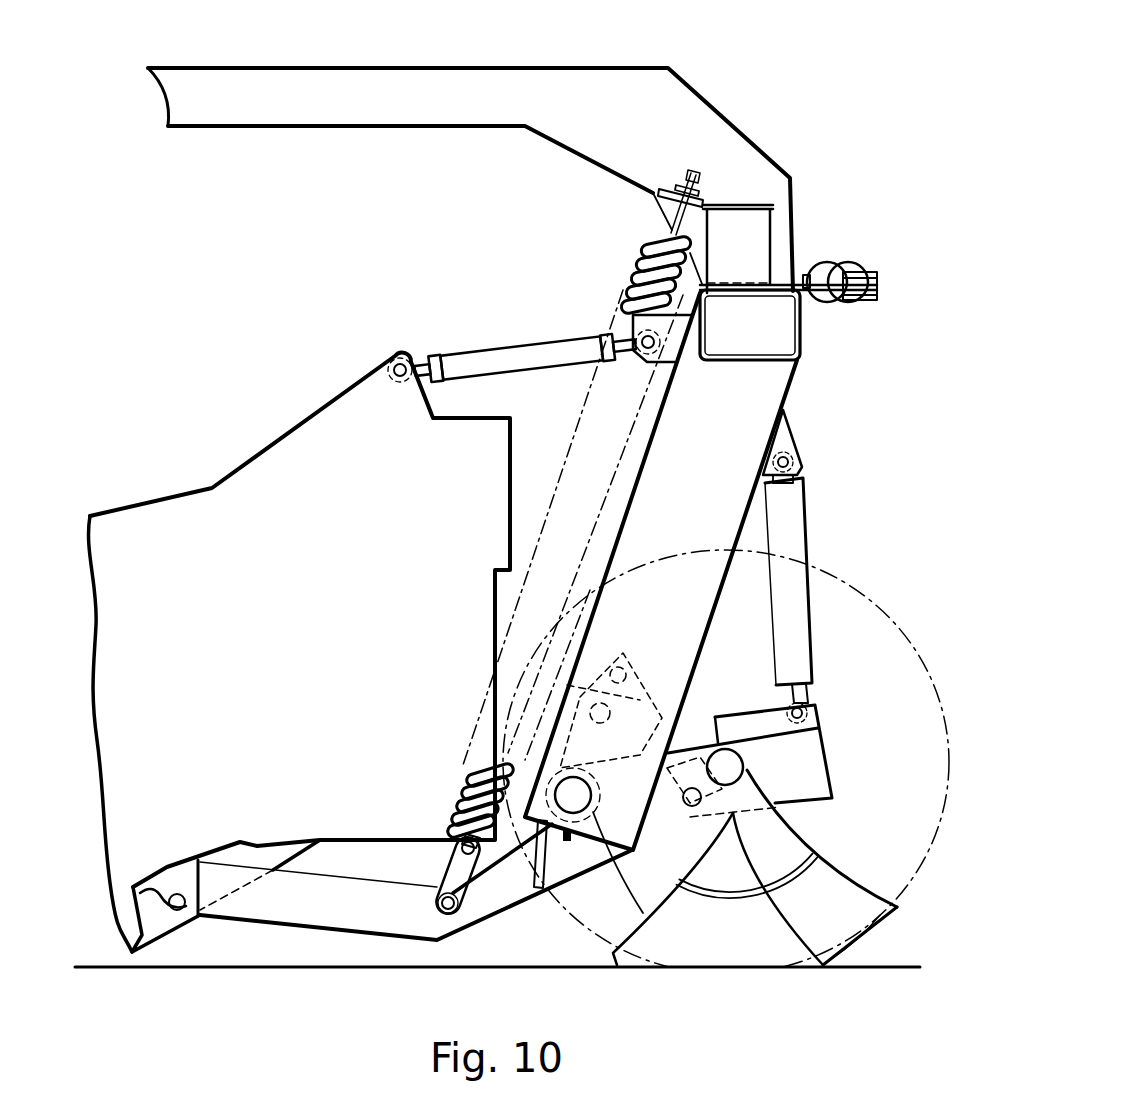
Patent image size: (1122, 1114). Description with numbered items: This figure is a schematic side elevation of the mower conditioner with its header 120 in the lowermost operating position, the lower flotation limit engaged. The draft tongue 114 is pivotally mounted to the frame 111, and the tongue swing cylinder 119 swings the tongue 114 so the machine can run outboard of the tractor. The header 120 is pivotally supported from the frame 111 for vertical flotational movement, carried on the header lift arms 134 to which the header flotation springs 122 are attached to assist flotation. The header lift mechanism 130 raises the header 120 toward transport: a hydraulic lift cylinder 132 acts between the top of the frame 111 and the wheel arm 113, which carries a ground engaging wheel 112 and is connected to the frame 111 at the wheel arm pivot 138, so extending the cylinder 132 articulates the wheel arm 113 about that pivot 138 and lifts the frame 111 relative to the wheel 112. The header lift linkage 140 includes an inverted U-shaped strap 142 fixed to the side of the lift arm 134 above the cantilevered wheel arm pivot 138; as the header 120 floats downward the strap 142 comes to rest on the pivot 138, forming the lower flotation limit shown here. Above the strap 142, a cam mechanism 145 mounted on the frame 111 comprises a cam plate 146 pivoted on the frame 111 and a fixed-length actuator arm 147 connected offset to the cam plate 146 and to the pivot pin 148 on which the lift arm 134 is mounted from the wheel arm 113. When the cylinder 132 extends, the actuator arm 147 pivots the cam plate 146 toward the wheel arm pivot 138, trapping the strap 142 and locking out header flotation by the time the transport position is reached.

The frame 111 is at (747, 397).
The ground engaging wheels 112 is at (870, 946).
The wheel arm 113 is at (806, 759).
The draft tongue 114 is at (328, 72).
The tongue swing cylinder 119 is at (834, 260).
The header 120 is at (232, 467).
The header flotation springs 122 is at (627, 266).
The header lift mechanism 130 is at (826, 666).
The hydraulic lift cylinder 132 is at (787, 541).
The header lift arm 134 is at (377, 916).
The wheel arm pivot 138 is at (643, 913).
The header lift linkage 140 is at (744, 842).
The inverted U-shaped strap 142 is at (535, 875).
The cam mechanism 145 is at (651, 626).
The cam plate 146 is at (558, 748).
The actuator arm 147 is at (603, 690).
The pivot pin 148 is at (776, 785).